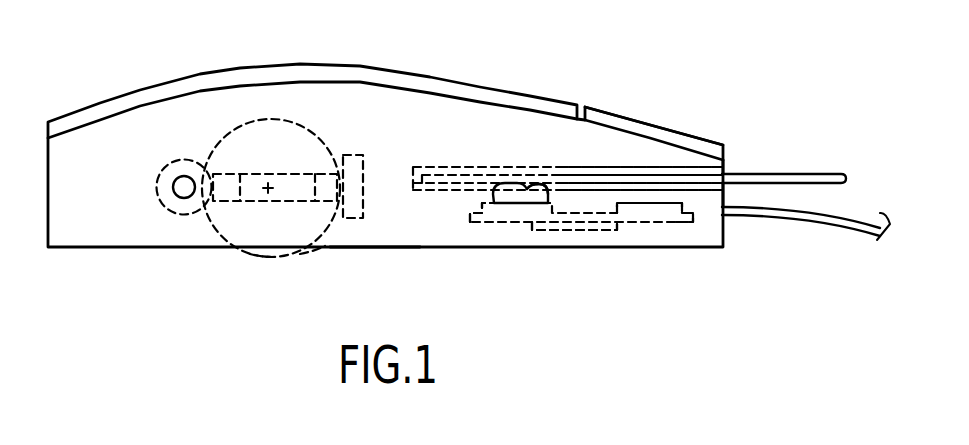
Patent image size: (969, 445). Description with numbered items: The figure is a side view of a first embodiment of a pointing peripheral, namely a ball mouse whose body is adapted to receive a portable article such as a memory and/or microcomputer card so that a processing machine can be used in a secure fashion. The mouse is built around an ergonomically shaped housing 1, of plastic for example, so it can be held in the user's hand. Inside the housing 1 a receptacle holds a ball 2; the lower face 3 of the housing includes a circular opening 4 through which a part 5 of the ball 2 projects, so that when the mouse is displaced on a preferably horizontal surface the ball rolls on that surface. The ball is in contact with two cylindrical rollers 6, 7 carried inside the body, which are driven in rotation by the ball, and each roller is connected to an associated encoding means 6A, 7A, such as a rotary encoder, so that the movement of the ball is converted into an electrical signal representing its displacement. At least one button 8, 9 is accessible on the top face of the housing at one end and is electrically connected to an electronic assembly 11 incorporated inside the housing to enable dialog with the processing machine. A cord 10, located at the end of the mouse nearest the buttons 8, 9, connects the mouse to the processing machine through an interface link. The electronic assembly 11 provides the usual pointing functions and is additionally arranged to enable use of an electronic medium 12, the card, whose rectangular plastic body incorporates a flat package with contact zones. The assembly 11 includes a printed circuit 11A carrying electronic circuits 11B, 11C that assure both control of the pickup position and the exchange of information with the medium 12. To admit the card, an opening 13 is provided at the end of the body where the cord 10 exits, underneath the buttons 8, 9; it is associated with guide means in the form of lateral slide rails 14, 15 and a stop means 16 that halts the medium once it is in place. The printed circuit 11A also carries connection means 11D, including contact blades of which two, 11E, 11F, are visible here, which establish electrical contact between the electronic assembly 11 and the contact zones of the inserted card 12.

The housing 1 is at (123, 232).
The ball 2 is at (285, 133).
The lower face 3 is at (373, 250).
The circular opening 4 is at (306, 250).
The part of the ball 5 is at (273, 247).
The cylindrical roller 6 is at (310, 195).
The encoding means 6A is at (383, 108).
The cylindrical roller 7 is at (184, 176).
The encoding means 7A is at (157, 180).
The button 8 is at (676, 133).
The button 9 is at (654, 126).
The cord 10 is at (803, 216).
The electronic assembly 11 is at (530, 241).
The printed circuit 11A is at (693, 218).
The electronic circuit 11B is at (668, 212).
The electronic circuit 11C is at (600, 230).
The connection means 11D is at (494, 208).
The contact blade 11E is at (500, 183).
The contact blade 11F is at (540, 185).
The electronic medium 12 is at (797, 177).
The opening 13 is at (723, 170).
The lateral slide rail 14 is at (605, 168).
The lateral slide rail 15 is at (641, 179).
The stop means 16 is at (413, 175).